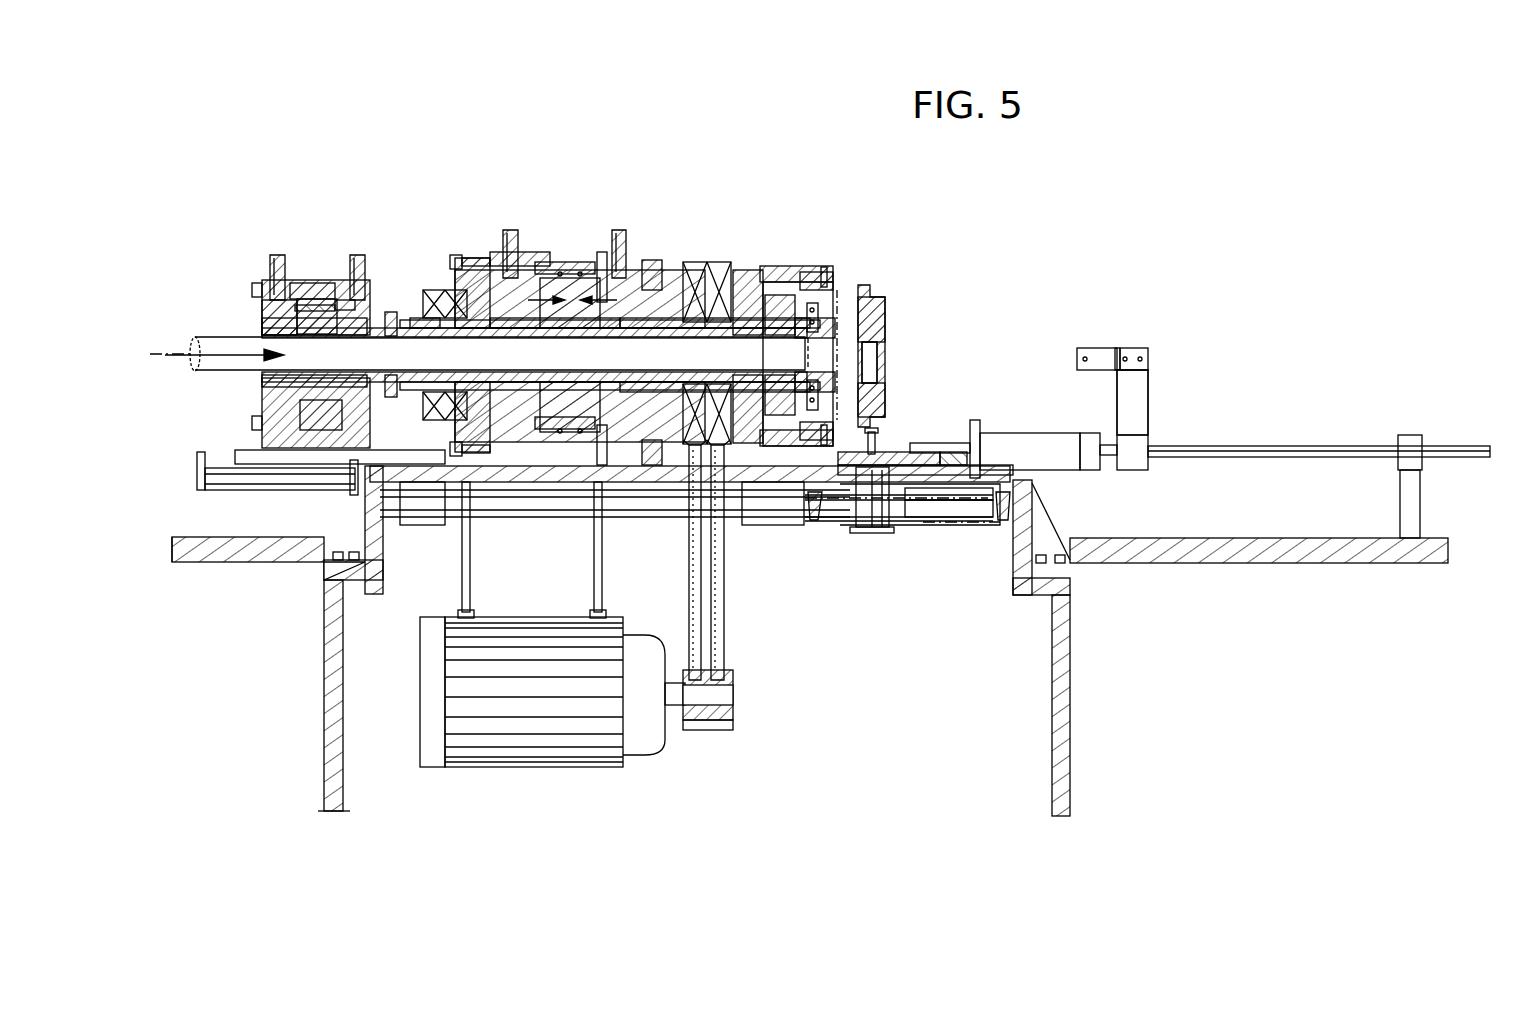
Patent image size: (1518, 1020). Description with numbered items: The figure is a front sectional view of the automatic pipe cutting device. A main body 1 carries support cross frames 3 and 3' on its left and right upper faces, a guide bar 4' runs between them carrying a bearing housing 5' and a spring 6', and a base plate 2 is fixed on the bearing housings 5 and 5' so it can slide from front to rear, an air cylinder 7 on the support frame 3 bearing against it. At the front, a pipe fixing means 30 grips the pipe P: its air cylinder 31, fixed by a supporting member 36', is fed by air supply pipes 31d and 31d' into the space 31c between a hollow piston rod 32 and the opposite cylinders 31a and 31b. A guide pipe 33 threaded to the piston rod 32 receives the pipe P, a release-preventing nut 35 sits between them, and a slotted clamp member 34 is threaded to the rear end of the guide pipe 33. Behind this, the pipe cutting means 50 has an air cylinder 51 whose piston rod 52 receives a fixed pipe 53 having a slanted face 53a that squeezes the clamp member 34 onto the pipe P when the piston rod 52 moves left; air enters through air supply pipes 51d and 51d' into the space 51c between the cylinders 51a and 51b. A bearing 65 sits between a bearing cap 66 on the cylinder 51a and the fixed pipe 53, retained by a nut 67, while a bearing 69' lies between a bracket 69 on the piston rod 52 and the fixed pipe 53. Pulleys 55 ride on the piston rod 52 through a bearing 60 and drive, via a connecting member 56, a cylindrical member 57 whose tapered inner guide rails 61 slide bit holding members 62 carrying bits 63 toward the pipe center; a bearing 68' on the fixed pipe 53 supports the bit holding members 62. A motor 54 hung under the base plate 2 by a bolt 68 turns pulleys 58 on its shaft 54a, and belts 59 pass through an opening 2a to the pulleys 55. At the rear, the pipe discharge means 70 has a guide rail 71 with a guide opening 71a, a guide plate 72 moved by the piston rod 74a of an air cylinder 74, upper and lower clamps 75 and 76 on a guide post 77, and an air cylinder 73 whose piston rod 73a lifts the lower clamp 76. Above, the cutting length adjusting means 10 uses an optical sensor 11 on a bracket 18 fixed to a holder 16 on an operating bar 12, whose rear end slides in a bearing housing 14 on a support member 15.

The pipe P is at (182, 346).
The pipe fixing means 30 is at (186, 288).
The cylinder 31a is at (260, 278).
The air supply pipe 31d is at (257, 262).
The space 31c is at (303, 282).
The air cylinder 31 is at (318, 266).
The cylinder 31b is at (353, 253).
The air supply pipe 31d' is at (387, 263).
The piston rod 32 is at (263, 330).
The release-preventing nut 35 is at (384, 315).
The guide pipe 33 is at (450, 340).
The pipe cutting means 50 is at (797, 238).
The bearing 65 is at (435, 290).
The nut 67 is at (411, 289).
The bearing cap 66 is at (465, 256).
The seal cup 51d is at (515, 217).
The cylinder 51a is at (532, 252).
The plate 51c is at (538, 270).
The air cylinder 51 is at (583, 264).
The cylinder 51b is at (600, 246).
The air supply pipe 51d' is at (640, 233).
The bearing 60 is at (692, 286).
The piston rod 52 is at (546, 336).
The fixed pipe 53 is at (668, 336).
The pulleys 55 is at (681, 262).
The connecting member 56 is at (739, 274).
The cylindrical member 57 is at (763, 267).
The bracket 69 is at (790, 320).
The bearing 68' is at (842, 334).
The bit holding member 62 is at (845, 314).
The guide rails 61 is at (810, 302).
The slotted clamp member 34 is at (866, 282).
The bit 63 is at (880, 309).
The upper clamp 75 is at (890, 334).
The guide post 77 is at (880, 368).
The lower clamp 76 is at (888, 395).
The bearing 69' is at (776, 355).
The supporting member 36' is at (313, 428).
The air cylinder 7 is at (243, 492).
The base plate 2 is at (547, 480).
The opening 2a is at (672, 485).
The bearing housing 5 is at (422, 522).
The slanted face 53a is at (770, 488).
The bearing housing 5' is at (817, 527).
The bolt 68 is at (515, 550).
The main body 1 is at (325, 662).
The support cross frame 3 is at (328, 532).
The support cross frame 3' is at (1230, 648).
The motor 54 is at (550, 763).
The belts 59 is at (728, 626).
The motor shaft 54a is at (732, 694).
The pulleys 58 is at (733, 720).
The pipe discharge means 70 is at (968, 362).
The piston rod 73a is at (876, 429).
The air cylinder 73 is at (875, 528).
The guide plate 72 is at (829, 520).
The guide rail 71 is at (951, 507).
The guide opening 71a is at (927, 522).
The guide bar 4' is at (920, 554).
The spring 6' is at (997, 540).
The piston rod 74a is at (980, 422).
The air cylinder 74 is at (1033, 434).
The optical sensor 11 is at (1078, 350).
The bracket 18 is at (1100, 347).
The feed device 10 is at (1155, 352).
The holder 16 is at (1150, 393).
The operating bar 12 is at (1256, 444).
The bearing housing 14 is at (1407, 436).
The support member 15 is at (1422, 494).